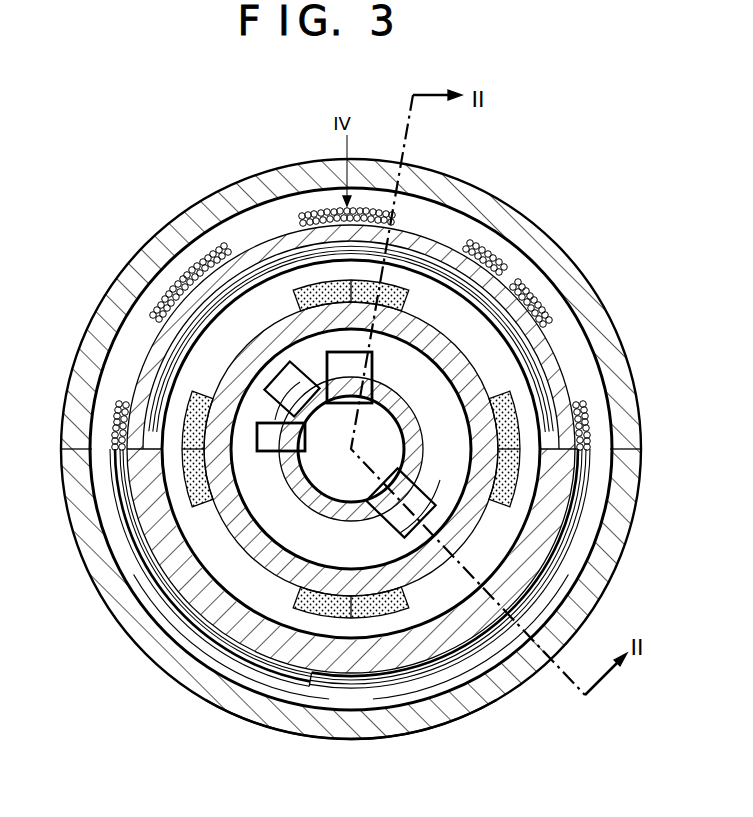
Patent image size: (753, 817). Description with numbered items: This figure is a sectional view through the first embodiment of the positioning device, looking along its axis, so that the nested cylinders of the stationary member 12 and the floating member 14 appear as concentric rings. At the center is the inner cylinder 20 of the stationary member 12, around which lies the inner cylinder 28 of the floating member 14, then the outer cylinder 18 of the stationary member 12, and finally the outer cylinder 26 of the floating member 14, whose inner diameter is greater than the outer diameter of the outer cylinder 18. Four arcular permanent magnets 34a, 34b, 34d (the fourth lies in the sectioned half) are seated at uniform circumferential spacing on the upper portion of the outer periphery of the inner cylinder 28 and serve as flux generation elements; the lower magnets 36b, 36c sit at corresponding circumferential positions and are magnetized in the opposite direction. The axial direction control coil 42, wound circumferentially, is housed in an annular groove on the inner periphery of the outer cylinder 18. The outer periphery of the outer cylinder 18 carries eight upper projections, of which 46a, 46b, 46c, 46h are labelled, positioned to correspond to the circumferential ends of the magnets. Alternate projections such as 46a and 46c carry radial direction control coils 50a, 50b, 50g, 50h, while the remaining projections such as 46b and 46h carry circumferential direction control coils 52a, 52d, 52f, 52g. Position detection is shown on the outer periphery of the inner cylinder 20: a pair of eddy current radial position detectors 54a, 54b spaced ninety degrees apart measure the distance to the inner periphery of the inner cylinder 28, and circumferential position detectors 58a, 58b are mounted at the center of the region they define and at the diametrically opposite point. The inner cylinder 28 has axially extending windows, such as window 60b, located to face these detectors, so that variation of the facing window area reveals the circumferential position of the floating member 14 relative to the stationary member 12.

The stationary member 12 is at (616, 478).
The floating member 14 is at (546, 228).
The outer cylinder 18 is at (320, 705).
The inner cylinder 20 is at (322, 500).
The outer cylinder 26 is at (578, 262).
The inner cylinder 28 is at (352, 522).
The permanent magnet 34a is at (410, 298).
The permanent magnet 34b is at (497, 392).
The permanent magnet 34d is at (198, 393).
The permanent magnet 36b is at (592, 522).
The permanent magnet 36c is at (300, 600).
The axial direction control coil 42 is at (610, 400).
The upper projection 46a is at (262, 215).
The upper projection 46b is at (445, 235).
The upper projection 46c is at (600, 358).
The upper projection 46h is at (140, 355).
The radial direction control coil 50a is at (198, 252).
The radial direction control coil 50b is at (582, 332).
The radial direction control coil 50g is at (453, 670).
The radial direction control coil 50h is at (133, 543).
The circumferential direction control coil 52a is at (362, 204).
The circumferential direction control coil 52d is at (148, 300).
The circumferential direction control coil 52f is at (565, 587).
The circumferential direction control coil 52g is at (232, 672).
The radial position detector 54a is at (376, 372).
The radial position detector 54b is at (264, 452).
The circumferential position detector 58a is at (287, 370).
The circumferential position detector 58b is at (428, 486).
The window 60b is at (455, 516).